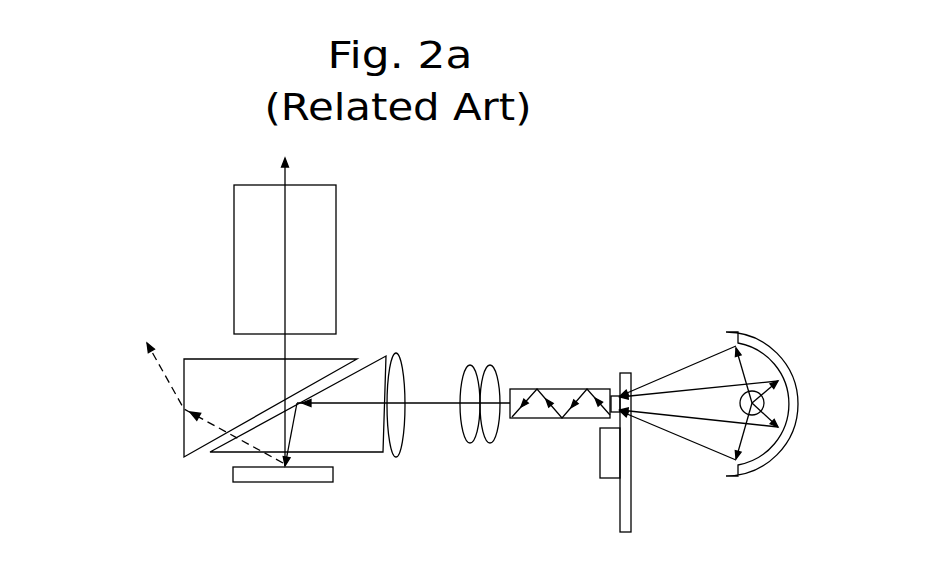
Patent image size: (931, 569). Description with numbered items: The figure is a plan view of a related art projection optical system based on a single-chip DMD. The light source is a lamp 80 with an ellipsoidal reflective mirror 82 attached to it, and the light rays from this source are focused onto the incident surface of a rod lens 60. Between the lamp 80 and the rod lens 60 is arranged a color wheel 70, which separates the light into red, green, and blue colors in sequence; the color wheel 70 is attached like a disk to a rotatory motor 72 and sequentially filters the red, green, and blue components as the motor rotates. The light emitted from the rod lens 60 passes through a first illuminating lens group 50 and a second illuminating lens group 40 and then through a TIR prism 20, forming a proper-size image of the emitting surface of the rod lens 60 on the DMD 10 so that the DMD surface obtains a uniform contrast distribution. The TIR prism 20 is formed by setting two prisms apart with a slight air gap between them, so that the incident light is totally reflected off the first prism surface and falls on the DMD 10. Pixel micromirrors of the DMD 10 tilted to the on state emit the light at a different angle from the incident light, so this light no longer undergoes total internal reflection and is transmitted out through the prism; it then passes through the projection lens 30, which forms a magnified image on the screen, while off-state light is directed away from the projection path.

The DMD 10 is at (333, 475).
The TIR prism 20 is at (225, 460).
The projection lens 30 is at (328, 216).
The second illuminating lens group 40 is at (395, 356).
The first illuminating lens group 50 is at (492, 366).
The rod lens 60 is at (563, 392).
The color wheel 70 is at (631, 513).
The rotatory motor 72 is at (600, 468).
The lamp 80 is at (764, 401).
The ellipsoidal reflective mirror 82 is at (777, 360).